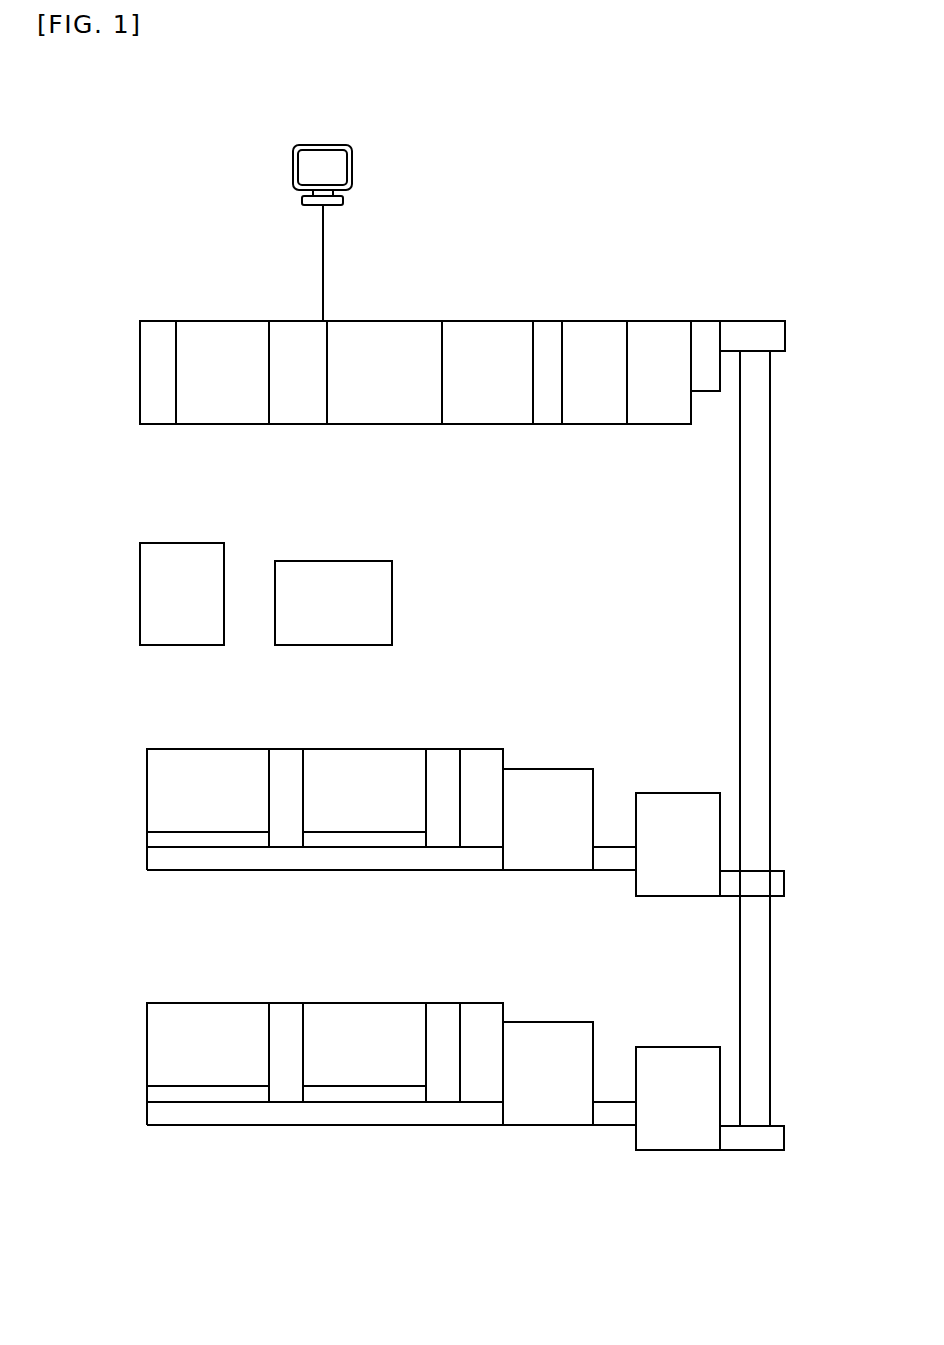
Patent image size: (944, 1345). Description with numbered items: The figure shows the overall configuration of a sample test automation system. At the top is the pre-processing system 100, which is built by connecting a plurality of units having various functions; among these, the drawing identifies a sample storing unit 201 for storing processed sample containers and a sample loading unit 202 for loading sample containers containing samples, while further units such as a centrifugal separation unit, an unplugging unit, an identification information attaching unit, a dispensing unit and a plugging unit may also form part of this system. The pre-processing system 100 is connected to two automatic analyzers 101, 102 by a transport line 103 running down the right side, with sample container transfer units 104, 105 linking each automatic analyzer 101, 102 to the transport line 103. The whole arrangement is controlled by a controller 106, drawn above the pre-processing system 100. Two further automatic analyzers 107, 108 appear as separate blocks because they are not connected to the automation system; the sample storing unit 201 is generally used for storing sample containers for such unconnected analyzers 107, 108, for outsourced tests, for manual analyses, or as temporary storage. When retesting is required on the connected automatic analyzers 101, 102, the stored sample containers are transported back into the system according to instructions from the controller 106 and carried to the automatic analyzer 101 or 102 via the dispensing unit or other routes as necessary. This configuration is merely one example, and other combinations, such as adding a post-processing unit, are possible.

The pre-processing system 100 is at (430, 335).
The automatic analyzer 101 is at (338, 742).
The automatic analyzer 102 is at (337, 992).
The transport line 103 is at (772, 750).
The sample container transfer unit 104 is at (672, 793).
The sample container transfer unit 105 is at (672, 1047).
The controller 106 is at (362, 135).
The automatic analyzer 107 is at (375, 560).
The automatic analyzer 108 is at (188, 542).
The sample storing unit 201 is at (218, 350).
The sample loading unit 202 is at (388, 350).